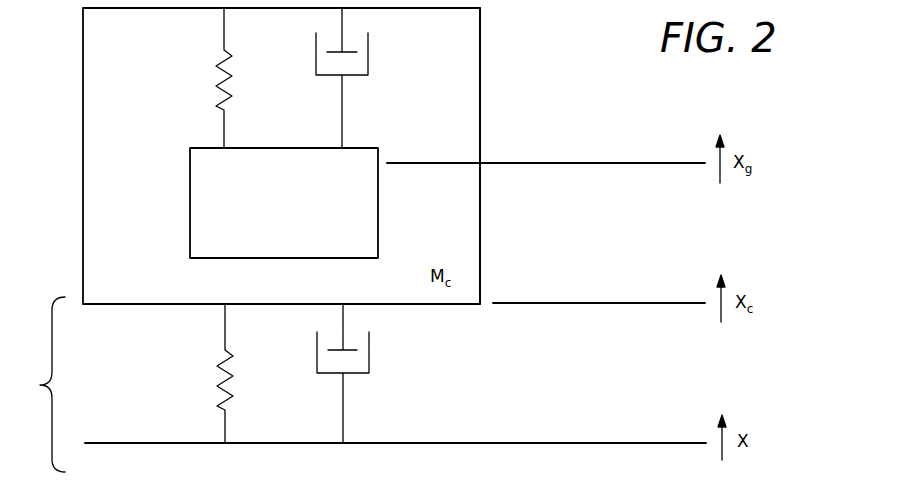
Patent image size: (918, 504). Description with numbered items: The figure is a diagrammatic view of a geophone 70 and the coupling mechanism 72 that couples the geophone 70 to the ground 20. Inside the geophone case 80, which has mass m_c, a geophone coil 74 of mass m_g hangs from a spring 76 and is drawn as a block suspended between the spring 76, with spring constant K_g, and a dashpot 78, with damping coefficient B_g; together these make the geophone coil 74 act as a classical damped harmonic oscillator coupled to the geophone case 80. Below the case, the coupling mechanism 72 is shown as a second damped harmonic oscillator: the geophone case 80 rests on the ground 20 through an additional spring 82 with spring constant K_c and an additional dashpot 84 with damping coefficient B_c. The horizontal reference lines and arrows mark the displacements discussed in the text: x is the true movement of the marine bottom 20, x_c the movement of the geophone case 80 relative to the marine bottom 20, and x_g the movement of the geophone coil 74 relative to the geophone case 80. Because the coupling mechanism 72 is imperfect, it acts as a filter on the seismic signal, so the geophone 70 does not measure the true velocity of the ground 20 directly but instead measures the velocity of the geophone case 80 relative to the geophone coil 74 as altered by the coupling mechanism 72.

The geophone 70 is at (112, 56).
The coupling mechanism 72 is at (40, 385).
The geophone coil 74 is at (189, 199).
The spring 76 is at (216, 80).
The dashpot 78 is at (369, 60).
The geophone case 80 is at (481, 63).
The additional spring 82 is at (217, 374).
The additional dashpot 84 is at (370, 358).
The ground 20 is at (540, 444).